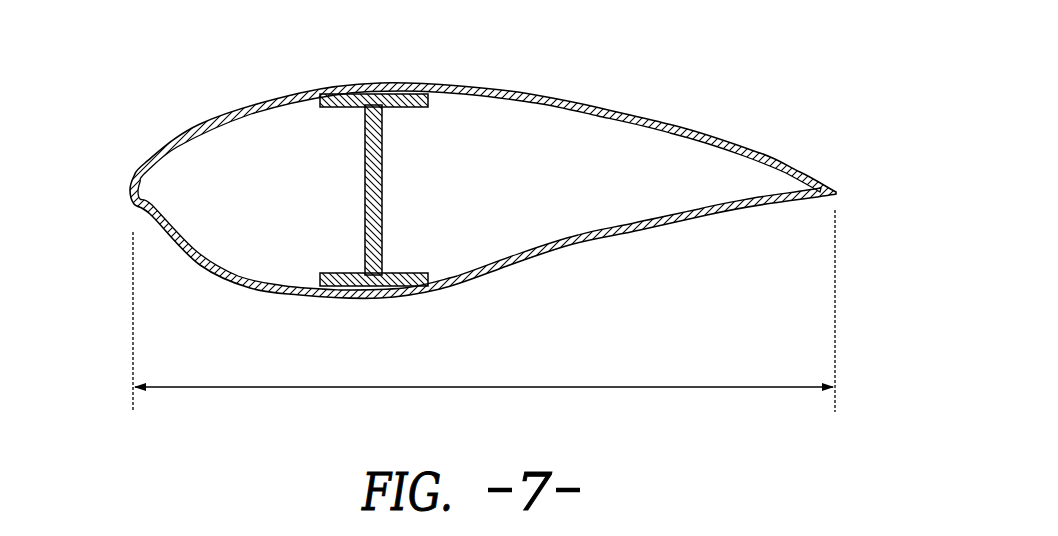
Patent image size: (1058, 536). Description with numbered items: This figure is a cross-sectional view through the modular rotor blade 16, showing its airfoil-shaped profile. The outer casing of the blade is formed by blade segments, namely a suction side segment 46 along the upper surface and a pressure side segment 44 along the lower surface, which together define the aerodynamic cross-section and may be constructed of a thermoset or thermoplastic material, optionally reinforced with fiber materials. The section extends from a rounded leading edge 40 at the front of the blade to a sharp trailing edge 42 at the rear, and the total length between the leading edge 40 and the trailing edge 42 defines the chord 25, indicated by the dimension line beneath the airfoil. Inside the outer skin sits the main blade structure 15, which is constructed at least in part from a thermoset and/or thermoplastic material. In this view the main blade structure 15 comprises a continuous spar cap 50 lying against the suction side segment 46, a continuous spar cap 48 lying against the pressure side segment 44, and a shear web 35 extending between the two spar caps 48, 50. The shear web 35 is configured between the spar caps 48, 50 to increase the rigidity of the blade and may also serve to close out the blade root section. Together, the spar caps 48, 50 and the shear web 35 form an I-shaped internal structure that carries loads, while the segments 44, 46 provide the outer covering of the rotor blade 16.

The rotor blade 16 is at (487, 151).
The leading edge 40 is at (487, 191).
The trailing edge 42 is at (832, 188).
The pressure side segment 44 is at (487, 191).
The suction side segment 46 is at (487, 170).
The shear web 35 is at (365, 192).
The main blade structure 15 is at (381, 190).
The spar cap 50 is at (395, 108).
The spar cap 48 is at (398, 272).
The chord 25 is at (627, 388).